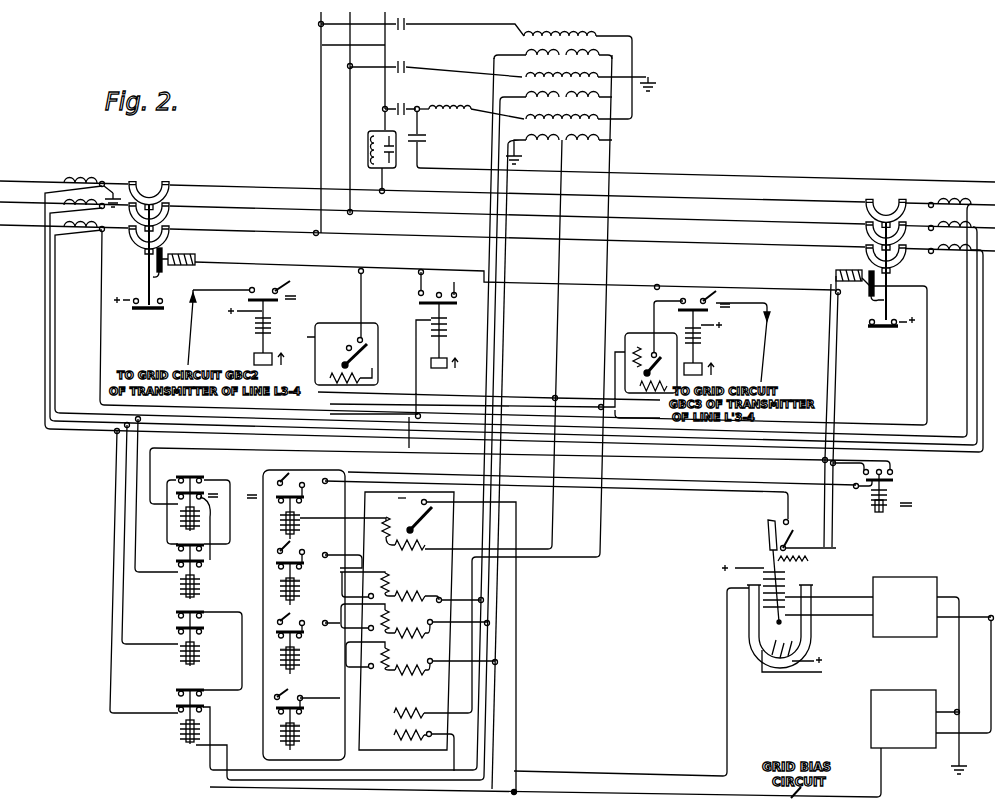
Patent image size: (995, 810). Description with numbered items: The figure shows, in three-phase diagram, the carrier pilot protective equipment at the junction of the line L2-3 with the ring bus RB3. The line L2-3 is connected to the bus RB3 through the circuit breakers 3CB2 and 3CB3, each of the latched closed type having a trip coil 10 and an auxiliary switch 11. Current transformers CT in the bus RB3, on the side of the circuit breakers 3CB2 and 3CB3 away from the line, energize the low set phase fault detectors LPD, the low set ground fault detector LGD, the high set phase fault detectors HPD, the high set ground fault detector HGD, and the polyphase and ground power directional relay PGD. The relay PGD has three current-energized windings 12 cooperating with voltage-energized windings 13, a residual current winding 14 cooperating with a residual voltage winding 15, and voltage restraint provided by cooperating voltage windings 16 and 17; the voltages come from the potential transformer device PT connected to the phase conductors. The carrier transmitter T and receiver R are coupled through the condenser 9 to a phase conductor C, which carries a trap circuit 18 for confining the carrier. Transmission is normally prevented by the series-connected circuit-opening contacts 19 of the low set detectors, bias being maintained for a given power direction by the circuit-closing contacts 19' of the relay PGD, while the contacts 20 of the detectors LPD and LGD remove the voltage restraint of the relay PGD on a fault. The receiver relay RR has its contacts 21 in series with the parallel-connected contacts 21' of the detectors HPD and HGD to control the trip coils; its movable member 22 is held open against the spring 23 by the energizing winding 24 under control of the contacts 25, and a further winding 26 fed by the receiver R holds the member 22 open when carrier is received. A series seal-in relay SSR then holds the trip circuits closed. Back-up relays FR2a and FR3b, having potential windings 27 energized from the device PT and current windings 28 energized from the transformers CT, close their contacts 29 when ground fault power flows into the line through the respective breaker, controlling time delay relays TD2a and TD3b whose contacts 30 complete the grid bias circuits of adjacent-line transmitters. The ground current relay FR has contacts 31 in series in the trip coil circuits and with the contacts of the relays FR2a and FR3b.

The condenser 9 is at (426, 138).
The trip coil 10 is at (185, 253).
The auxiliary switch 11 is at (146, 312).
The current-energized windings 12 is at (391, 581).
The voltage-energized windings 13 is at (422, 592).
The residual current-energized winding 14 is at (386, 539).
The residual voltage-energized winding 15 is at (424, 538).
The voltage winding 16 is at (394, 712).
The voltage winding 17 is at (394, 734).
The trap circuit 18 is at (378, 131).
The circuit-opening contacts 19 is at (169, 568).
The circuit-closing contacts 19' is at (450, 645).
The circuit-opening contacts 20 is at (205, 480).
The contacts 21 is at (809, 534).
The circuit-closing contacts 21' is at (300, 581).
The movable contact-controlling member 22 is at (766, 540).
The spring 23 is at (812, 561).
The energizing winding 24 is at (786, 582).
The circuit-opening contacts 25 is at (298, 579).
The winding 26 is at (810, 598).
The potential windings 27 is at (511, 362).
The current windings 28 is at (316, 349).
The contacts 29 is at (359, 337).
The contacts 30 is at (464, 314).
The contacts 31 is at (451, 296).
The phase conductor C is at (388, 95).
The polyphase bushing potential transformer device PT is at (555, 98).
The current transformers CT is at (62, 208).
The ring bus RB3 is at (256, 232).
The line L2-3 is at (318, 41).
The circuit breaker 3CB2 is at (135, 240).
The circuit breaker 3CB3 is at (895, 262).
The time delay relay TD2a is at (250, 332).
The time delay relay TD3b is at (699, 347).
The fault responsive relay FR2a is at (483, 362).
The time delay circuit-closing ground current relay FR is at (446, 340).
The fault responsive relay FR3b is at (630, 333).
The low set ground fault detector LGD is at (196, 530).
The low set phase fault detectors LPD is at (185, 590).
The high set ground fault detector HGD is at (298, 531).
The high set phase fault detectors HPD is at (291, 604).
The polyphase and ground power directional relay PGD is at (406, 621).
The series seal-in relay SSR is at (889, 493).
The receiver relay RR is at (812, 631).
The carrier receiver R is at (933, 662).
The carrier transmitter T is at (908, 731).